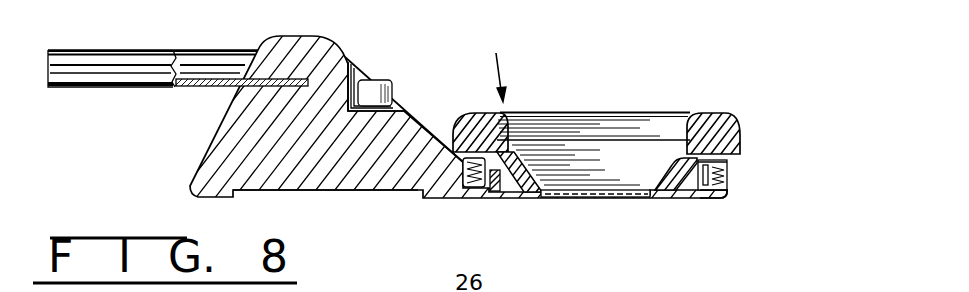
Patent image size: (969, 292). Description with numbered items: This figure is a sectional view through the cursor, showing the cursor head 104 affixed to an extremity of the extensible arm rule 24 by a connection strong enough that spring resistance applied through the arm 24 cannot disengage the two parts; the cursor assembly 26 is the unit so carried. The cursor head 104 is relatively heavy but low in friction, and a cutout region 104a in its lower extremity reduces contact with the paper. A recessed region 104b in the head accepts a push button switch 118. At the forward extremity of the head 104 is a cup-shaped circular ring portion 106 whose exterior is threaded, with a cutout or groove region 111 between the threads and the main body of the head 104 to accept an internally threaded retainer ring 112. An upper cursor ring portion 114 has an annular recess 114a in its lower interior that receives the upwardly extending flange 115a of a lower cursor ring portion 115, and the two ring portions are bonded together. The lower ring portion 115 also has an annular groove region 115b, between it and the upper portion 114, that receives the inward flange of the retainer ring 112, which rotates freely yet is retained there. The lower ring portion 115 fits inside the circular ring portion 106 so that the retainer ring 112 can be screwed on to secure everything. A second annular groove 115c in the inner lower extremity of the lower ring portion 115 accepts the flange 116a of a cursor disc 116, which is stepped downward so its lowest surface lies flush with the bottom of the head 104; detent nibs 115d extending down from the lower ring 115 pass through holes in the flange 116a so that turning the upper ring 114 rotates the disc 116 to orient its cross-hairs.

The extensible arm rule 24 is at (54, 49).
The microphone assembly 26 is at (506, 66).
The cursor head 104 is at (215, 148).
The cutout region 104a is at (362, 192).
The recessed region 104b is at (400, 44).
The circular ring portion 106 is at (715, 200).
The cutout or groove region 111 is at (466, 163).
The retainer ring 112 is at (728, 171).
The upper cursor ring portion 114 is at (735, 120).
The annular recess 114a is at (688, 142).
The lower cursor ring portion 115 is at (510, 186).
The upwardly extending flange 115a is at (512, 147).
The annular groove region 115b is at (478, 190).
The second annular groove 115c is at (537, 195).
The detent nibs 115d is at (663, 195).
The cursor disc 116 is at (603, 196).
The cursor disc flange 116a is at (657, 197).
The push button switch 118 is at (390, 83).